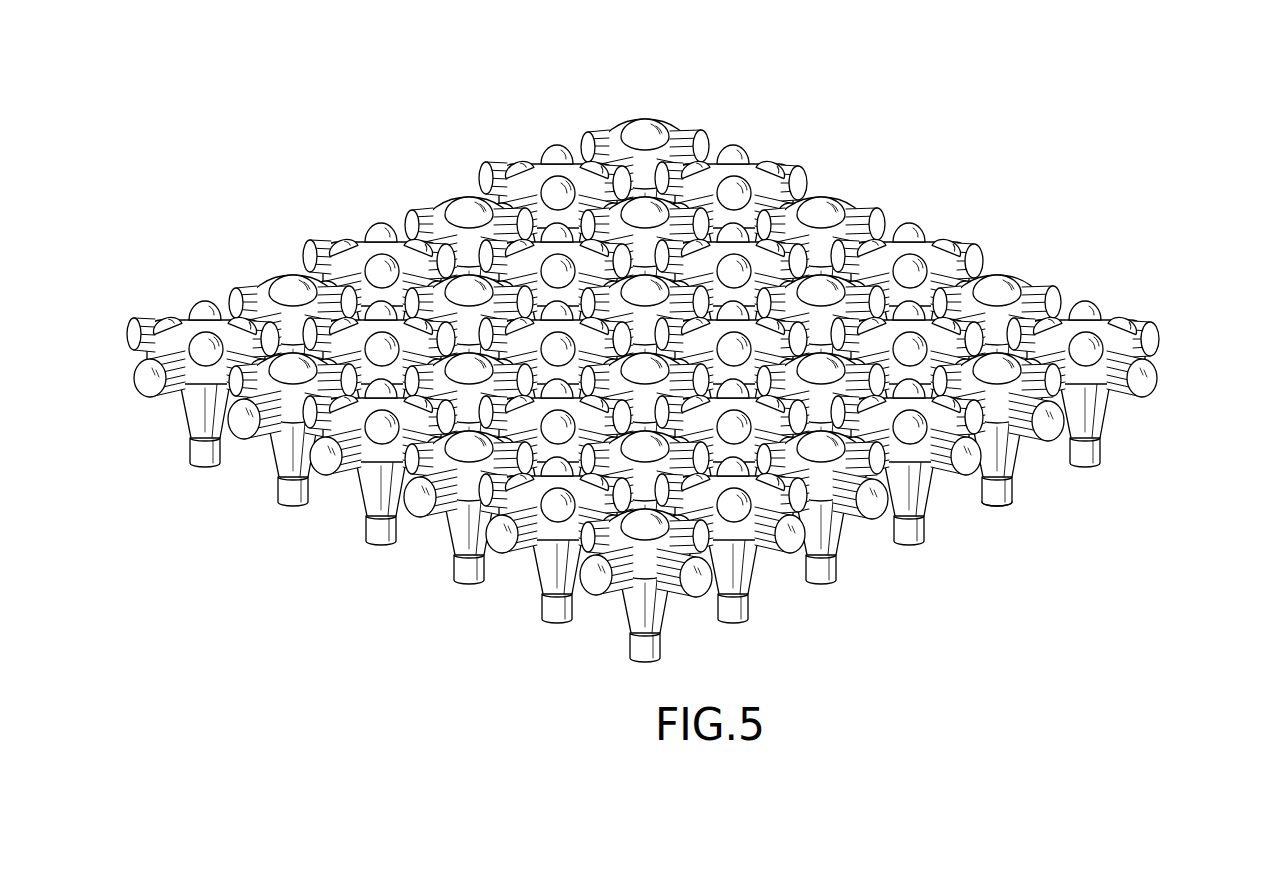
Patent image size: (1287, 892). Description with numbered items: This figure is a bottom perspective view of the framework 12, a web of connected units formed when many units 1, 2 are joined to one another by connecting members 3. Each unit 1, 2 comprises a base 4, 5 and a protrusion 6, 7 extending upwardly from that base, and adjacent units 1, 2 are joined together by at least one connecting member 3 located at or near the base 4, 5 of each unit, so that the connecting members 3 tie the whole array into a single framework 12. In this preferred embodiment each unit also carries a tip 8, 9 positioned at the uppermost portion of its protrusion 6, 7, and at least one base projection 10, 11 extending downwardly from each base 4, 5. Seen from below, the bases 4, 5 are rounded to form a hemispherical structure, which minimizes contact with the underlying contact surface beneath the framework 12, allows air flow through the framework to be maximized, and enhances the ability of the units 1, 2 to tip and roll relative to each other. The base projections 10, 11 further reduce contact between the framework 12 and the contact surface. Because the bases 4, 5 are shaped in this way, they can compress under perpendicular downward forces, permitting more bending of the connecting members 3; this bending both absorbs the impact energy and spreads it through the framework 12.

The unit 1 is at (1044, 483).
The unit 2 is at (1200, 324).
The connecting member 3 is at (1012, 253).
The base 4 is at (1134, 416).
The base 5 is at (1137, 274).
The protrusion 6 is at (1014, 537).
The protrusion 7 is at (1179, 381).
The tip 8 is at (975, 555).
The tip 9 is at (1141, 474).
The base projection 10 is at (841, 163).
The base projection 11 is at (934, 206).
The framework 12 is at (697, 334).